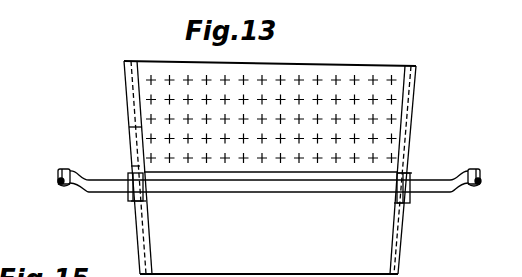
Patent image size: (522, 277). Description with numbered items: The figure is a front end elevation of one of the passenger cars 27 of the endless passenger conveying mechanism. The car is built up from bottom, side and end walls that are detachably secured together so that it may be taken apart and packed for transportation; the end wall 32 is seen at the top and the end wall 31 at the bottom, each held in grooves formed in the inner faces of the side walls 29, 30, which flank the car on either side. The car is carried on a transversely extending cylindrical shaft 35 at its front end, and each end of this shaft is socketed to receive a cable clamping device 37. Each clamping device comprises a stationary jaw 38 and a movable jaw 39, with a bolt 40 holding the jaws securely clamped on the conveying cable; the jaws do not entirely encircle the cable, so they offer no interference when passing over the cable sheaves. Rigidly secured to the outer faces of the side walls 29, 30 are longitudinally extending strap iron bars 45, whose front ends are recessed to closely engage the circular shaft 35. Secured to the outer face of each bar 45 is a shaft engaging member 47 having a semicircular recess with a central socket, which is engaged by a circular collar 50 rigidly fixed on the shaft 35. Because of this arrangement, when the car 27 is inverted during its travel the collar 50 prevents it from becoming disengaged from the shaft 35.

The passenger car 27 is at (396, 62).
The side wall 29 is at (315, 133).
The side wall 30 is at (126, 100).
The end wall 31 is at (365, 252).
The end wall 32 is at (348, 72).
The cylindrical shaft 35 is at (114, 189).
The cable clamping device 37 is at (55, 184).
The stationary jaw 38 is at (69, 170).
The movable jaw 39 is at (60, 170).
The bolt 40 is at (56, 177).
The strap iron bar 45 is at (138, 166).
The shaft engaging member 47 is at (135, 202).
The circular collar 50 is at (128, 176).